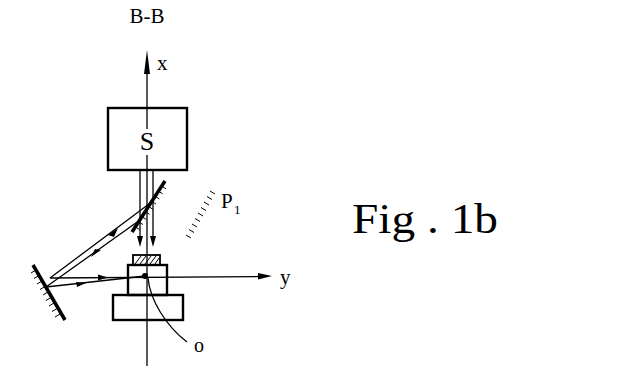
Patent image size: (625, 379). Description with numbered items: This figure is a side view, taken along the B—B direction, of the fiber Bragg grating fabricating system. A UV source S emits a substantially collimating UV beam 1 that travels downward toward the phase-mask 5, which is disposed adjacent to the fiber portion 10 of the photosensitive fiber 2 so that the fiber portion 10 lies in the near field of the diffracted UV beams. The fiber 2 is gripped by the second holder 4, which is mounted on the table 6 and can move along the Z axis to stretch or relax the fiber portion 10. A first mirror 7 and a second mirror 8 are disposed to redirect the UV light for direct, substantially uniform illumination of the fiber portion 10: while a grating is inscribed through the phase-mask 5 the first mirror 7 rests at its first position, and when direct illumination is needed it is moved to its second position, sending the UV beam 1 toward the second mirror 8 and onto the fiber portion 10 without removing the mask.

The UV beam 1 is at (138, 208).
The photosensitive fiber 2 is at (166, 269).
The second holder 4 is at (167, 282).
The phase-mask 5 is at (132, 258).
The table 6 is at (130, 311).
The first mirror 7 is at (168, 182).
The second mirror 8 is at (45, 293).
The fiber portion 10 is at (186, 268).